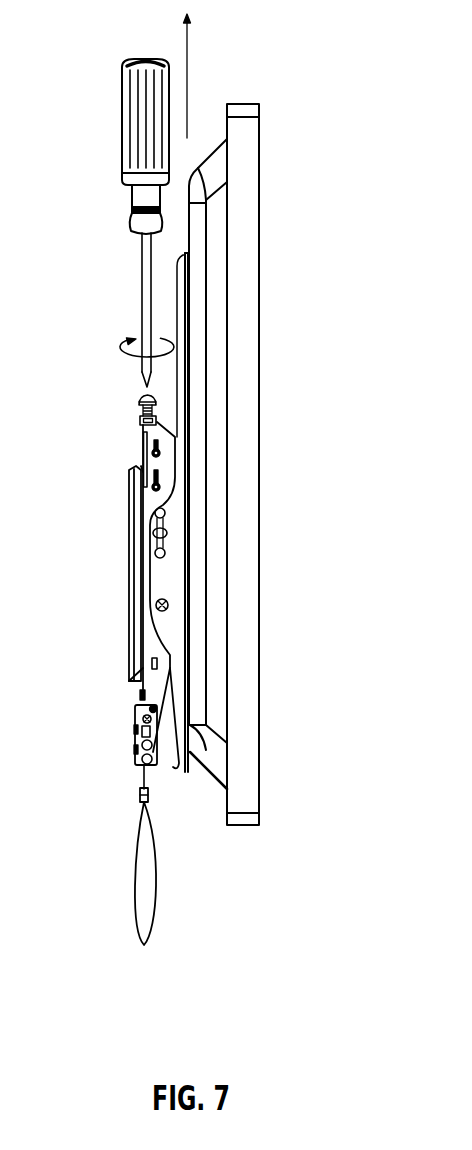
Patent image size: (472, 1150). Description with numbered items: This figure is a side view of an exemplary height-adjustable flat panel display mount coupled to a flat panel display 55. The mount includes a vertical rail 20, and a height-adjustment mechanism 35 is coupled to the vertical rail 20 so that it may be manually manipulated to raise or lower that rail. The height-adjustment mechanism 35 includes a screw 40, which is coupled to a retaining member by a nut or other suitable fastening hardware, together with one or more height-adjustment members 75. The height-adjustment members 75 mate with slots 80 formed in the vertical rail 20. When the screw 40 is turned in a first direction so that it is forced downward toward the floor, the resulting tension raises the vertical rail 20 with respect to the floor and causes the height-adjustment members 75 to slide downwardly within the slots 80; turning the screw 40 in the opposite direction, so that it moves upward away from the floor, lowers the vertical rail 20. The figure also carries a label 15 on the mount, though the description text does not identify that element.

The handle bar 15 is at (120, 551).
The vertical rail 20 is at (156, 678).
The height-adjustment mechanism 35 is at (134, 421).
The screw 40 is at (132, 398).
The flat panel display 55 is at (292, 160).
The height-adjustment member 75 is at (136, 489).
The slot 80 is at (135, 473).